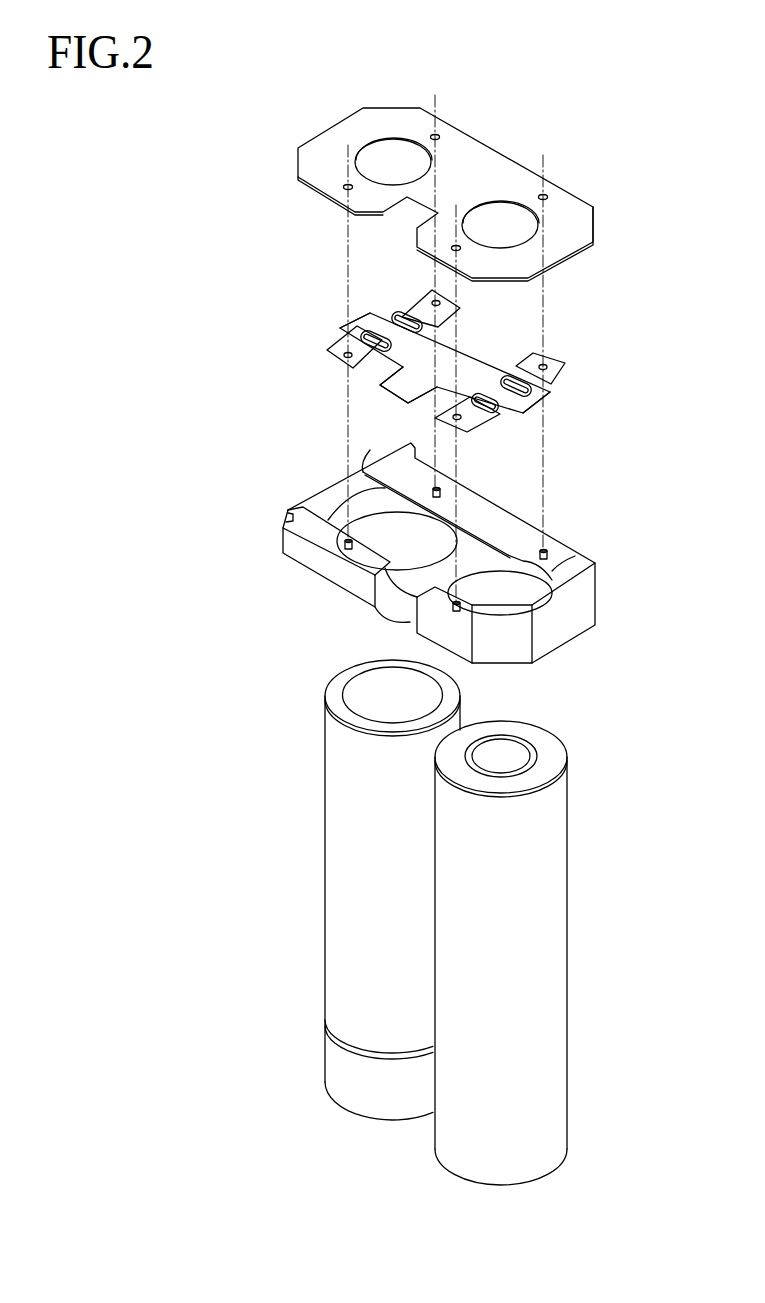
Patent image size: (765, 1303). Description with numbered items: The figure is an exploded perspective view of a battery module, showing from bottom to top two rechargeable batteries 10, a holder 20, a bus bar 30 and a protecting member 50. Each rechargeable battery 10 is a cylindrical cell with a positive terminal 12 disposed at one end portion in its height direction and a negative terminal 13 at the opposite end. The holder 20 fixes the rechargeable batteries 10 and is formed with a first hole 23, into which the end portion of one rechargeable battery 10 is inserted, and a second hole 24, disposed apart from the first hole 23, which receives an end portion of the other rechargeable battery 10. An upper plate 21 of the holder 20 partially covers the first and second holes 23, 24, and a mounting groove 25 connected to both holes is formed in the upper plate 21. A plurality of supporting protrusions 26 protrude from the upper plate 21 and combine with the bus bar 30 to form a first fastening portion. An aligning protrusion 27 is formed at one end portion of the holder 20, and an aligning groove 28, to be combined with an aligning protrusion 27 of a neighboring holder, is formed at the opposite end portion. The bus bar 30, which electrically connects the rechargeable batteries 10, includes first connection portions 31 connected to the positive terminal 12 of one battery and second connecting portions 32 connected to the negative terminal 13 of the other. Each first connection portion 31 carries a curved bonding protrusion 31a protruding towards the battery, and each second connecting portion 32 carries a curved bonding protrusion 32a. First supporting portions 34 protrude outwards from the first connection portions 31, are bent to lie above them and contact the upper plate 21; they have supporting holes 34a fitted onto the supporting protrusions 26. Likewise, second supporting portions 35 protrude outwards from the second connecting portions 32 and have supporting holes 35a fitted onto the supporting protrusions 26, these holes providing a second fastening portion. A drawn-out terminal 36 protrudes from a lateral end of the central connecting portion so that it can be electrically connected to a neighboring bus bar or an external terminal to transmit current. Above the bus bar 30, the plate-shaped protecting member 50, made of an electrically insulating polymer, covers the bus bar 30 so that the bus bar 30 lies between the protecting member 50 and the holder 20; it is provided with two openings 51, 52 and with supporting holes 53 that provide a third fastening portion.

The rechargeable battery 10 is at (317, 966).
The positive terminal 12 is at (518, 757).
The negative terminal 13 is at (372, 690).
The holder 20 is at (615, 605).
The upper plate 21 is at (577, 583).
The first hole 23 is at (575, 556).
The second hole 24 is at (340, 497).
The mounting groove 25 is at (478, 537).
The supporting protrusion 26 is at (437, 488).
The aligning protrusion 27 is at (407, 447).
The aligning groove 28 is at (288, 517).
The bus bar 30 is at (475, 333).
The first connection portion 31 is at (523, 405).
The bonding protrusion 31a is at (512, 385).
The second connecting portion 32 is at (358, 326).
The bonding protrusion 32a is at (398, 316).
The first supporting portion 34 is at (560, 373).
The supporting hole 34a is at (462, 432).
The second supporting portion 35 is at (425, 298).
The supporting hole 35a is at (327, 364).
The drawn-out terminal 36 is at (398, 387).
The protecting member 50 is at (512, 148).
The opening 51 is at (545, 210).
The opening 52 is at (392, 147).
The supporting hole 53 is at (438, 135).